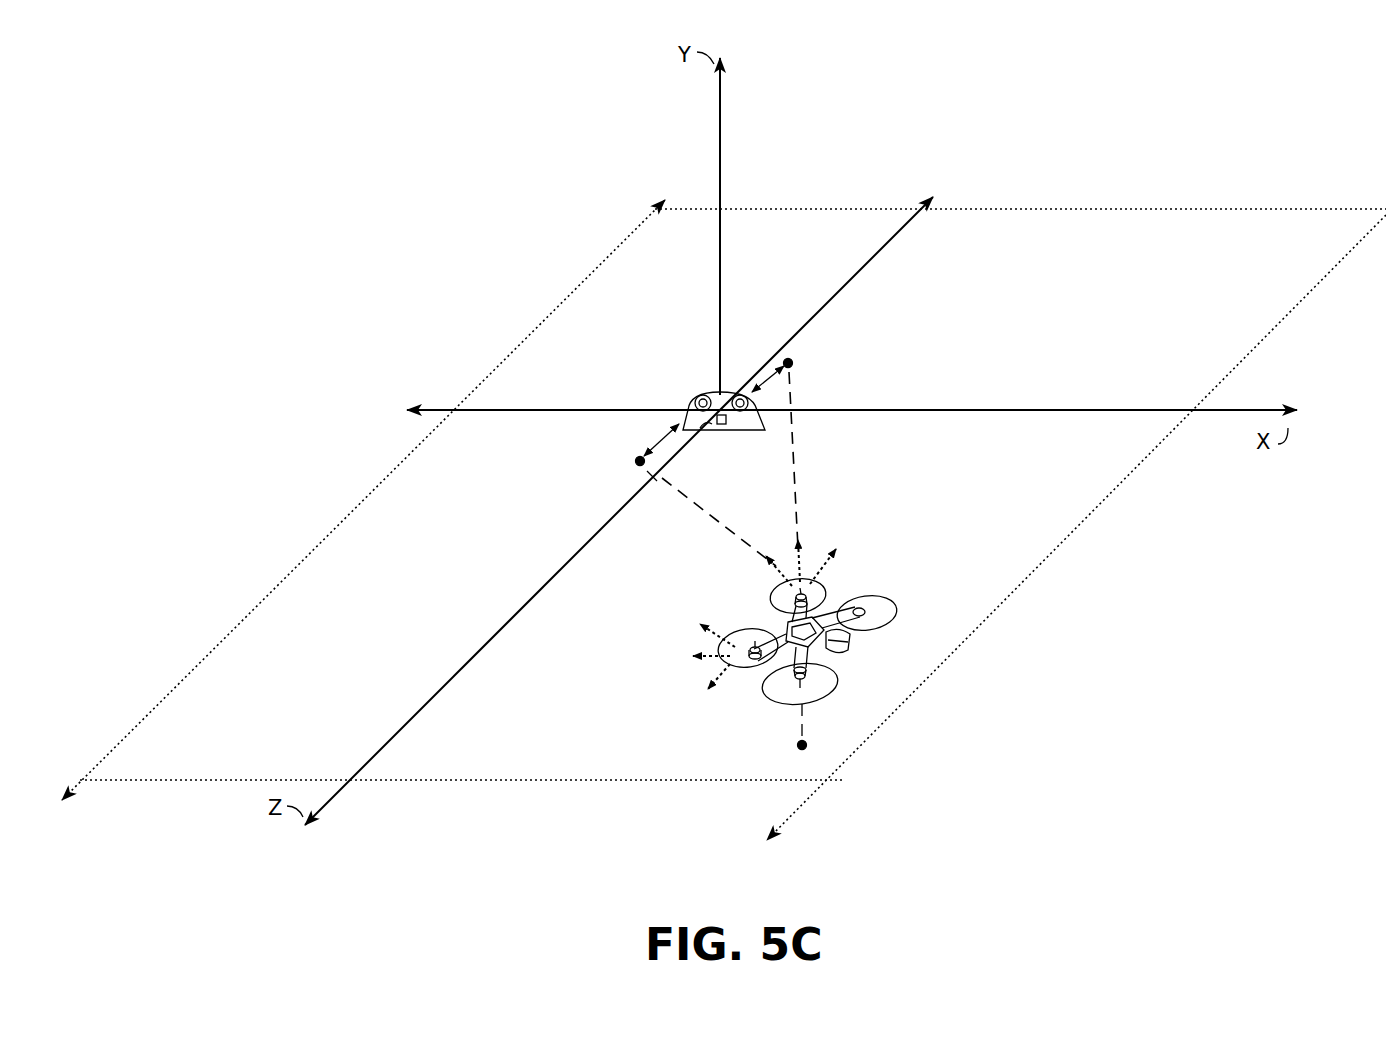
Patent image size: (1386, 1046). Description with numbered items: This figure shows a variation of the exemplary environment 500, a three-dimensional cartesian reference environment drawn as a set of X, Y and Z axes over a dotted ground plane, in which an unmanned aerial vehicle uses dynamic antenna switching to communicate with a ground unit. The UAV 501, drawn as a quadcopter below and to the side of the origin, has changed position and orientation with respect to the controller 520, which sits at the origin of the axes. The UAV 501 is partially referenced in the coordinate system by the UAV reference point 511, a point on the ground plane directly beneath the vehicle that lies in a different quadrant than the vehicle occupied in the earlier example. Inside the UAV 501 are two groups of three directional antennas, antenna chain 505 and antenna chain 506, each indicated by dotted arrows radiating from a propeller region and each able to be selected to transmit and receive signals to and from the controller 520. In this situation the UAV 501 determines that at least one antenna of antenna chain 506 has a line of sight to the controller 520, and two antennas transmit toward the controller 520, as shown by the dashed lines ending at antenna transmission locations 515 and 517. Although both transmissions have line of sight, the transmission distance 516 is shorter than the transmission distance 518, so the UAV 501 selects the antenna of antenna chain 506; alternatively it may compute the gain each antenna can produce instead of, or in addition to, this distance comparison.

The exemplary environment 500 is at (147, 160).
The UAV 501 is at (852, 640).
The antenna chain 505 is at (703, 672).
The antenna chain 506 is at (828, 588).
The UAV reference point 511 is at (818, 742).
The antenna transmission location 515 is at (808, 460).
The transmission distance 516 is at (762, 365).
The antenna transmission location 517 is at (695, 527).
The transmission distance 518 is at (650, 432).
The controller 520 is at (712, 391).